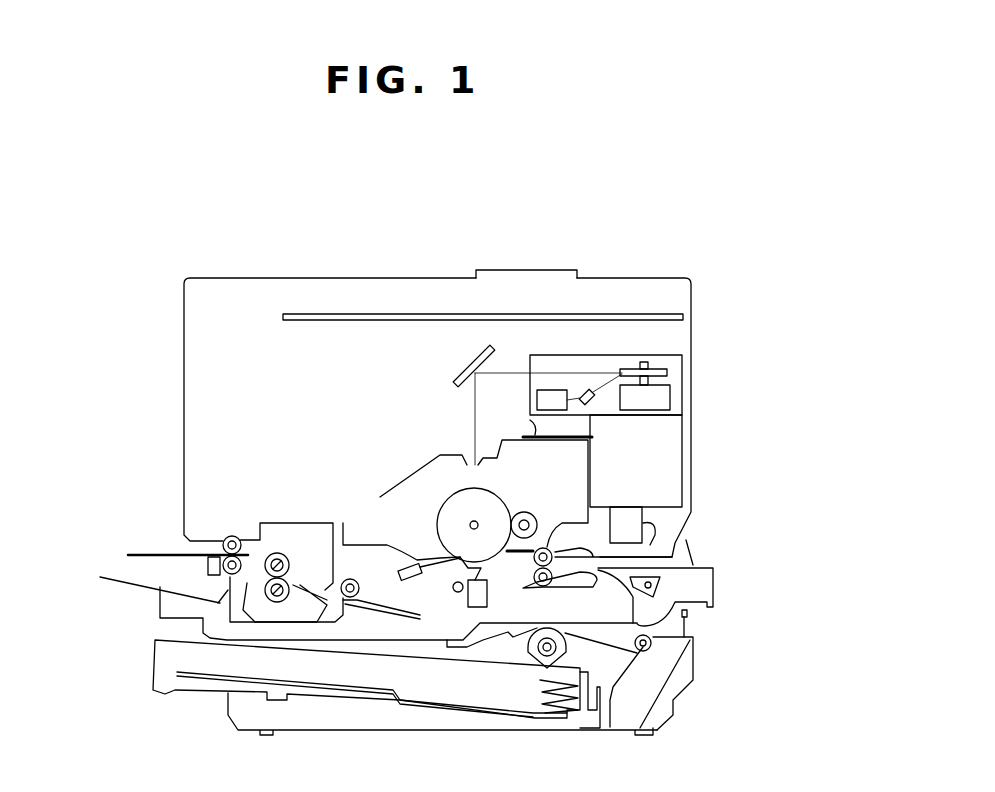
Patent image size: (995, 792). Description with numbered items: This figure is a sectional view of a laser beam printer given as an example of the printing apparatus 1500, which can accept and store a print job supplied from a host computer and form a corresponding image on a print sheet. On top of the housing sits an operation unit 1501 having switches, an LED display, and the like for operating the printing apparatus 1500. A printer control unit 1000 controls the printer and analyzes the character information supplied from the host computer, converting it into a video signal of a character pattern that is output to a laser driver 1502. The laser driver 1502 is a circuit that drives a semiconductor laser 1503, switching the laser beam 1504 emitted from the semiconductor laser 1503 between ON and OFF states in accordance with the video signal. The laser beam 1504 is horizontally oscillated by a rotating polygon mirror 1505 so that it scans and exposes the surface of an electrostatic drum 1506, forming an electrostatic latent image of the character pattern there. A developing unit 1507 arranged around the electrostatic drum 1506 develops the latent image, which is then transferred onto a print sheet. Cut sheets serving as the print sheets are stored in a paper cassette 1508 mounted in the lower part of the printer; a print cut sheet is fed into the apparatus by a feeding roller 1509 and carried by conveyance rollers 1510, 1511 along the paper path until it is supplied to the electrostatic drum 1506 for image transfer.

The printer control unit 1000 is at (665, 313).
The printing apparatus 1500 is at (641, 278).
The operation unit 1501 is at (528, 268).
The laser driver 1502 is at (543, 400).
The semiconductor laser 1503 is at (592, 403).
The laser beam 1504 is at (600, 372).
The rotating polygon mirror 1505 is at (670, 371).
The electrostatic drum 1506 is at (447, 503).
The developing unit 1507 is at (365, 520).
The paper cassette 1508 is at (167, 673).
The feeding roller 1509 is at (532, 650).
The conveyance roller 1510 is at (633, 657).
The conveyance roller 1511 is at (540, 592).